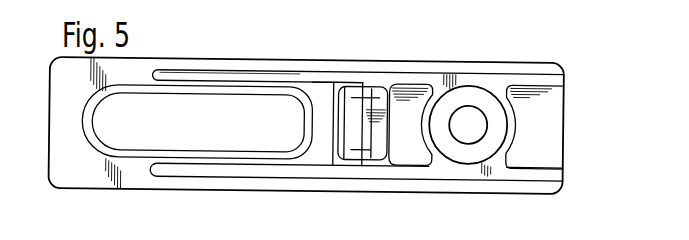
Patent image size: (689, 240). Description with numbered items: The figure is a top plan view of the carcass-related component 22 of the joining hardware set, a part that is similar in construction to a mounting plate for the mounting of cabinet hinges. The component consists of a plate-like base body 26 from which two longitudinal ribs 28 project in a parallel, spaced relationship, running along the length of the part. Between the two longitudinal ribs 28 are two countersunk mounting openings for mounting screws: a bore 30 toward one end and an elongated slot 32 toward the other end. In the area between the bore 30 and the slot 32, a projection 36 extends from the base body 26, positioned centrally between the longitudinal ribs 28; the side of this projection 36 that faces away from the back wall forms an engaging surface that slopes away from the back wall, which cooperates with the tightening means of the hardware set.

The carcass-related component 22 is at (458, 60).
The plate-like base body 26 is at (73, 177).
The longitudinal ribs 28 is at (260, 72).
The bore 30 is at (465, 135).
The slot 32 is at (202, 143).
The projection 36 is at (378, 100).